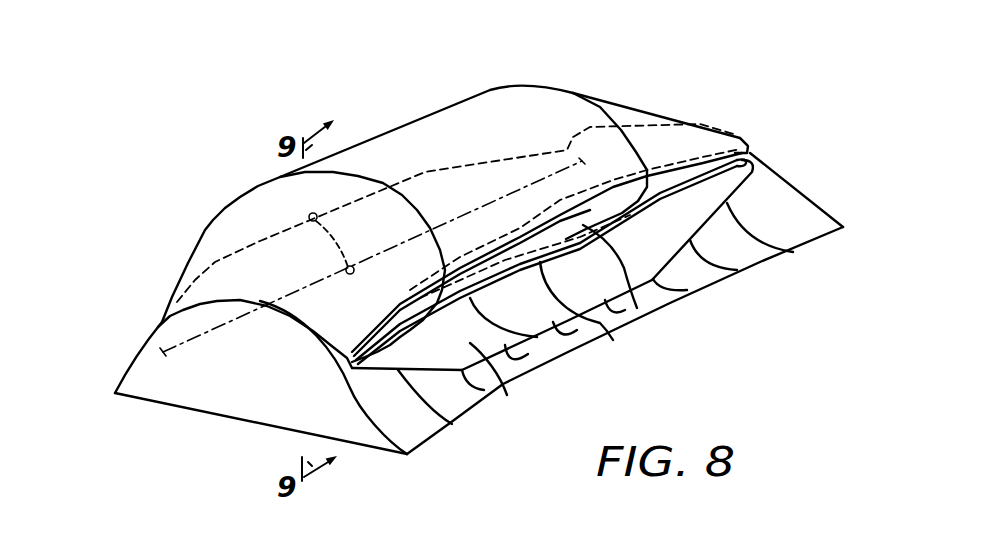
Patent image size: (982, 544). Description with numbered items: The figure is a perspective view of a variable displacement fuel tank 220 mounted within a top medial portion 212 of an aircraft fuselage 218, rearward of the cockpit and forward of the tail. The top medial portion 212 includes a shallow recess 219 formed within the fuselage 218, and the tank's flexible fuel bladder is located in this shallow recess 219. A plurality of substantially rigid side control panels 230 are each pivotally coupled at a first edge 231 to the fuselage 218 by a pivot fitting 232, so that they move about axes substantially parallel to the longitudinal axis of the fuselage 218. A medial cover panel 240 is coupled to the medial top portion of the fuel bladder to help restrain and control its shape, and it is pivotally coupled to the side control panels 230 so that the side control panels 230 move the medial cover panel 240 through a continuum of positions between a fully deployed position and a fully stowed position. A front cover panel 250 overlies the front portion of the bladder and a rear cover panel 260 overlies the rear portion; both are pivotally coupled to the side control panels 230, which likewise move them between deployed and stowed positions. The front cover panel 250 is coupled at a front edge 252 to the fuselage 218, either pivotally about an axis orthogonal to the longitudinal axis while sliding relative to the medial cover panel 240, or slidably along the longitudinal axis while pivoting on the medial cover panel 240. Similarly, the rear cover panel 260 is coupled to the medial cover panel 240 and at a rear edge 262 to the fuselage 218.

The top medial portion 212 is at (443, 395).
The fuselage 218 is at (724, 290).
The shallow recess 219 is at (517, 383).
The variable displacement fuel tank 220 is at (345, 96).
The side control panel 230 is at (640, 309).
The first edge 231 is at (605, 325).
The pivot fitting 232 is at (545, 352).
The medial cover panel 240 is at (440, 122).
The front cover panel 250 is at (253, 203).
The front edge 252 is at (293, 315).
The rear cover panel 260 is at (617, 110).
The rear edge 262 is at (737, 137).